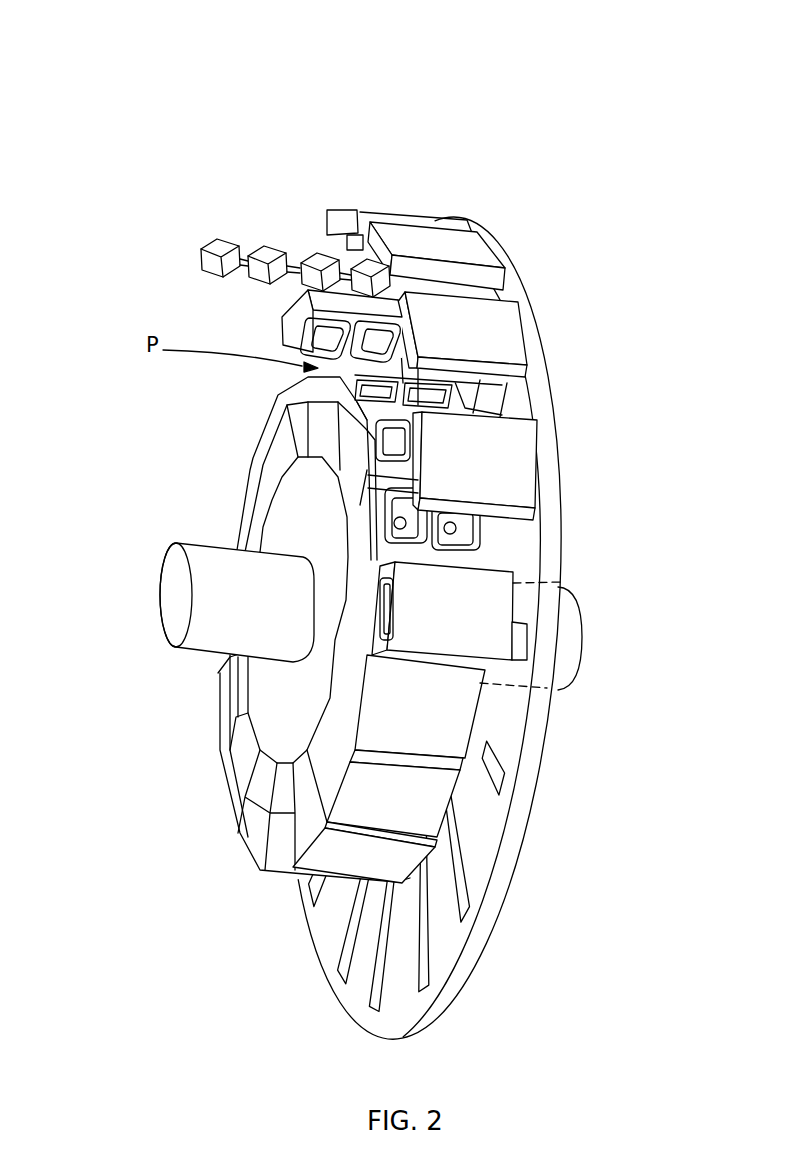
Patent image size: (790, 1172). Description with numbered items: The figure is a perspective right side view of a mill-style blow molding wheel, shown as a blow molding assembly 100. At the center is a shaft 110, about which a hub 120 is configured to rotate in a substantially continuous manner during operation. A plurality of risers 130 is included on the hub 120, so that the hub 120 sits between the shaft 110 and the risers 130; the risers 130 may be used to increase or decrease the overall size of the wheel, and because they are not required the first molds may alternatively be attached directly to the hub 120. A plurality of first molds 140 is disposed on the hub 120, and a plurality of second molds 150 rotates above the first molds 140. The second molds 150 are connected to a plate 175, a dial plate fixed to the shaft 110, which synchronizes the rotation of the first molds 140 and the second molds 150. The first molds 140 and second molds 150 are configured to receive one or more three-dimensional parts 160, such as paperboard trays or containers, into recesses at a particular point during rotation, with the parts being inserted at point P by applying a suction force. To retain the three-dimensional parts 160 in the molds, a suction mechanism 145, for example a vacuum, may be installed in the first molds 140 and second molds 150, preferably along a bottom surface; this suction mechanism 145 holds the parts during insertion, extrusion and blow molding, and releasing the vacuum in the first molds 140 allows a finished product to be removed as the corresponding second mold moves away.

The blow molding assembly 100 is at (152, 72).
The shaft 110 is at (160, 628).
The hub 120 is at (273, 537).
The risers 130 is at (258, 785).
The first molds 140 is at (483, 557).
The suction mechanism 145 is at (453, 527).
The second molds 150 is at (513, 328).
The three-dimensional parts 160 is at (203, 248).
The plate 175 is at (340, 998).